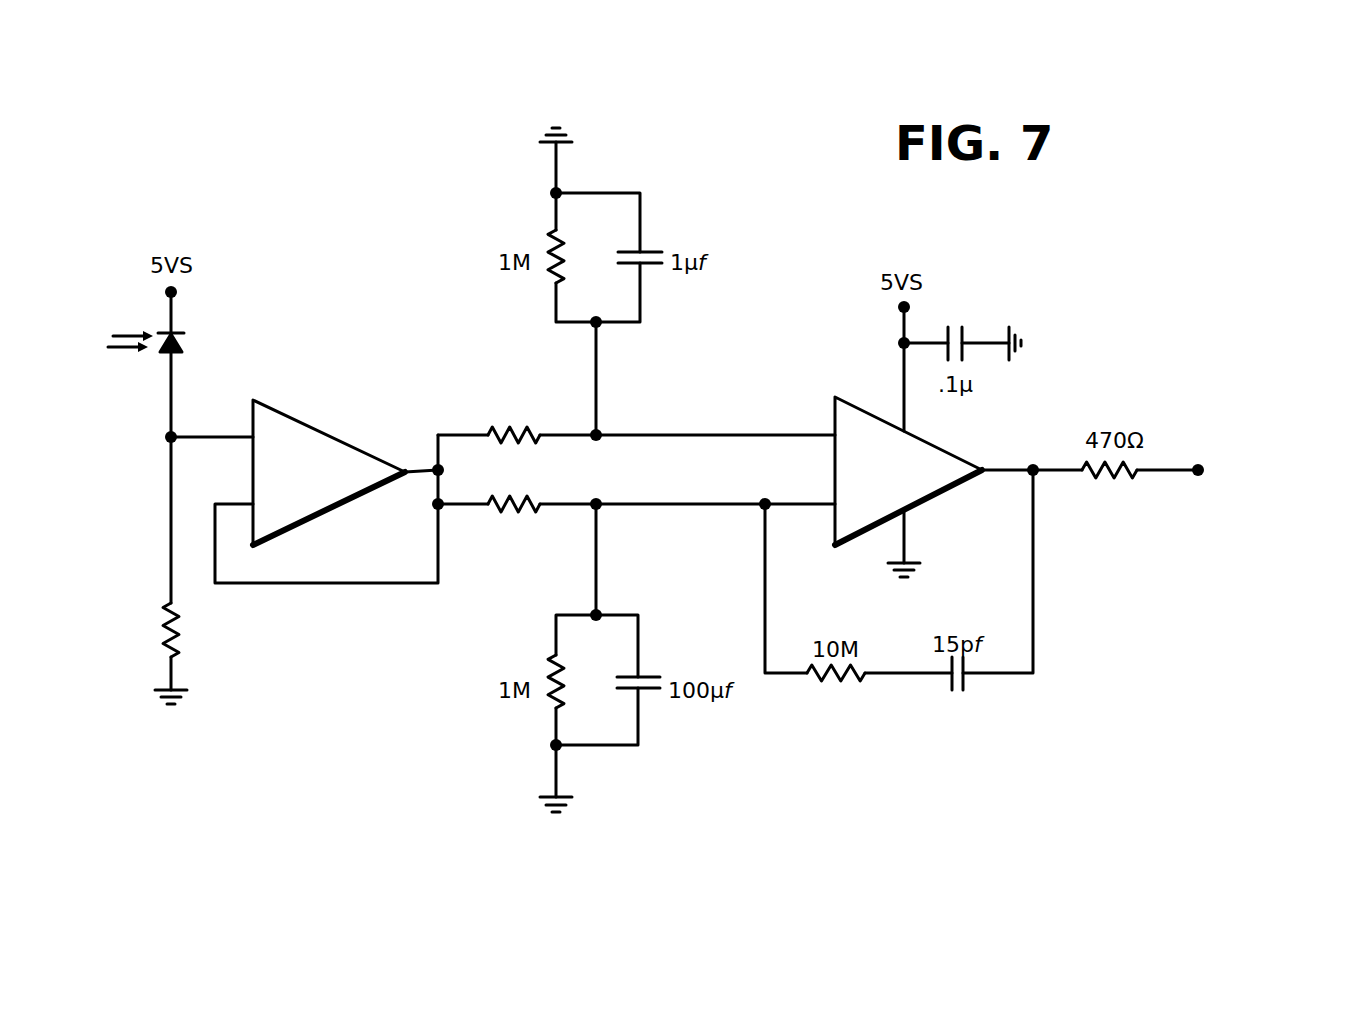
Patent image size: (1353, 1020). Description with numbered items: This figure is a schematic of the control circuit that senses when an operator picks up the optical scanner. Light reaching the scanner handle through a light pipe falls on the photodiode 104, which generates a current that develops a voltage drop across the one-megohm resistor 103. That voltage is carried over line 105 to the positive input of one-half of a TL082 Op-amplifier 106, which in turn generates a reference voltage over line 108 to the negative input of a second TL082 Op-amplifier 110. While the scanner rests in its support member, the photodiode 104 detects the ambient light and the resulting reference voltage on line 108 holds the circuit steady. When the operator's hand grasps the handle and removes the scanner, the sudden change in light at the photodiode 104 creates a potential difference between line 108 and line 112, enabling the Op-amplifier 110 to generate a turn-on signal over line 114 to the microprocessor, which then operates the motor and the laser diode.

The 1M resistor 103 is at (181, 640).
The photodiode 104 is at (183, 346).
The line 105 is at (197, 436).
The Op-amplifier 106 is at (318, 433).
The line 108 is at (656, 504).
The second Op-amplifier 110 is at (938, 496).
The line 112 is at (683, 435).
The line 114 is at (1160, 471).